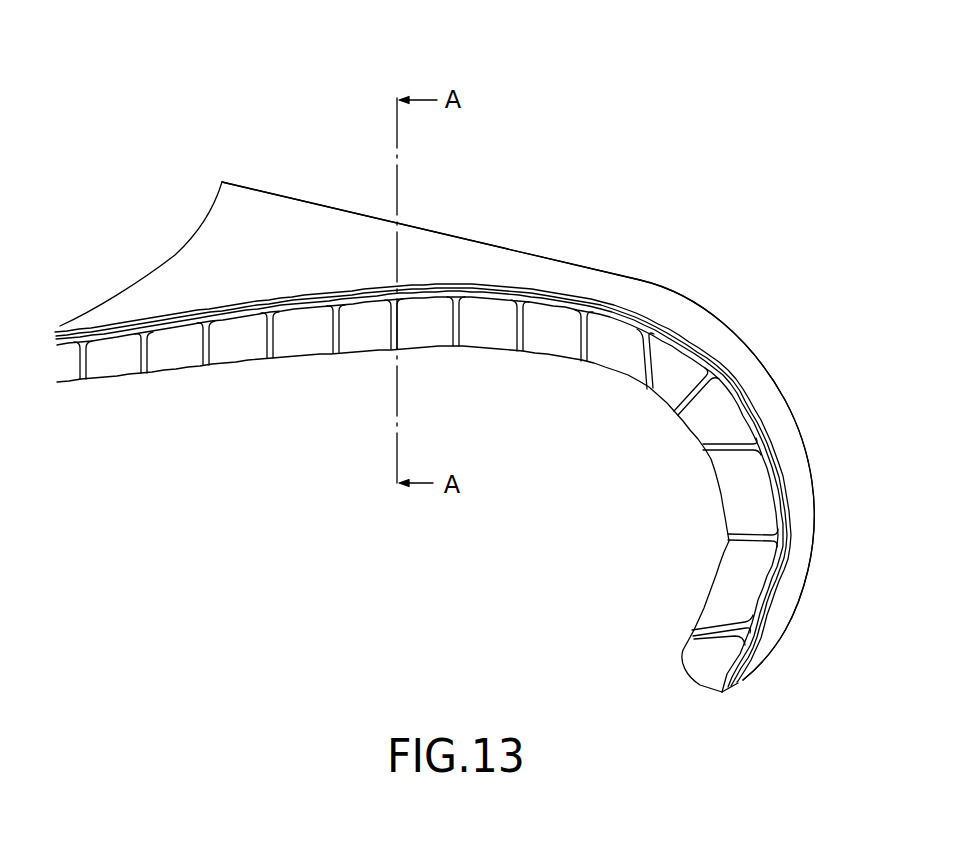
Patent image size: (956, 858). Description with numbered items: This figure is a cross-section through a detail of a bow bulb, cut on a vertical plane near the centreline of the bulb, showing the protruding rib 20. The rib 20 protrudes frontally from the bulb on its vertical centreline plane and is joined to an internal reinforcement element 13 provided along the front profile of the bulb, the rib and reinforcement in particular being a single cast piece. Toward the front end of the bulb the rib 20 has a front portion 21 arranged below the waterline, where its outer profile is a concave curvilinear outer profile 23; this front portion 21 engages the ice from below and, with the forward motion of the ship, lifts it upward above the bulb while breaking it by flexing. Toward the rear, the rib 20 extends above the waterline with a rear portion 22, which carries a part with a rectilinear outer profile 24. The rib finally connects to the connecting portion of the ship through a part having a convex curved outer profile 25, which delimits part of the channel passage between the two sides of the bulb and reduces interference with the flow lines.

The internal reinforcement element 13 is at (600, 363).
The rib 20 is at (620, 232).
The front portion 21 is at (768, 413).
The rear portion 22 is at (438, 248).
The concave curvilinear outer profile 23 is at (736, 331).
The rectilinear outer profile 24 is at (293, 197).
The convex curved outer profile 25 is at (178, 251).